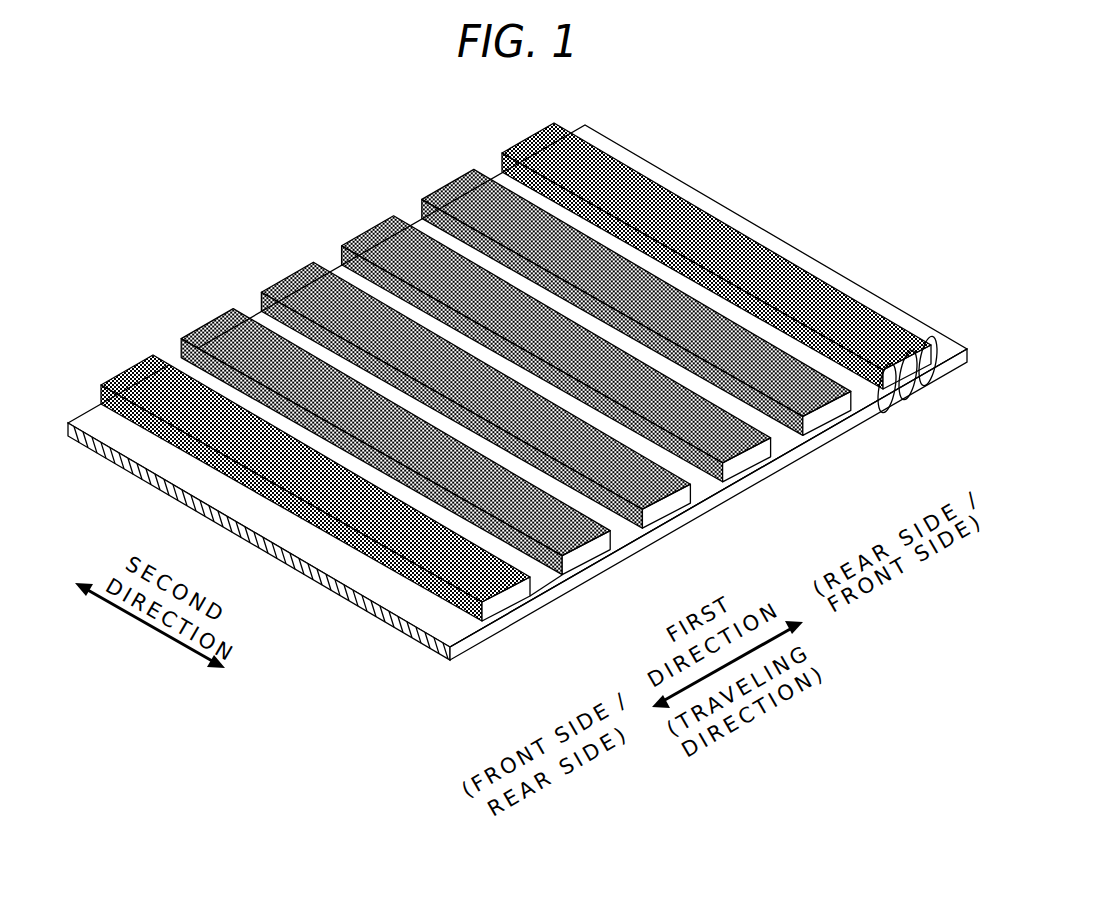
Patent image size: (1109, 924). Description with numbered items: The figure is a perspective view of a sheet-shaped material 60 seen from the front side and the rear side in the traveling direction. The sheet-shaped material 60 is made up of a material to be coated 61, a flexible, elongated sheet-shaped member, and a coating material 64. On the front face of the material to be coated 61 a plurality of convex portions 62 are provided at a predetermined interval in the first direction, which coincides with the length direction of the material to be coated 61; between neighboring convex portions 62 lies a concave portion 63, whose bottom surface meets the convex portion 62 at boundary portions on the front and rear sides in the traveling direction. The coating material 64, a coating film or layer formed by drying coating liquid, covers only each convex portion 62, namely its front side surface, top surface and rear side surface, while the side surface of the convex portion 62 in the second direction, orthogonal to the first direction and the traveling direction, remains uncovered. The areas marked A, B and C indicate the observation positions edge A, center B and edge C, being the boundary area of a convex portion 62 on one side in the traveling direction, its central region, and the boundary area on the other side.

The sheet-shaped material 60 is at (517, 435).
The material to be coated 61 is at (347, 612).
The convex portion 62 is at (510, 600).
The concave portion 63 is at (541, 571).
The coating material 64 is at (461, 563).
The edge A is at (886, 413).
The center B is at (907, 400).
The edge C is at (967, 410).